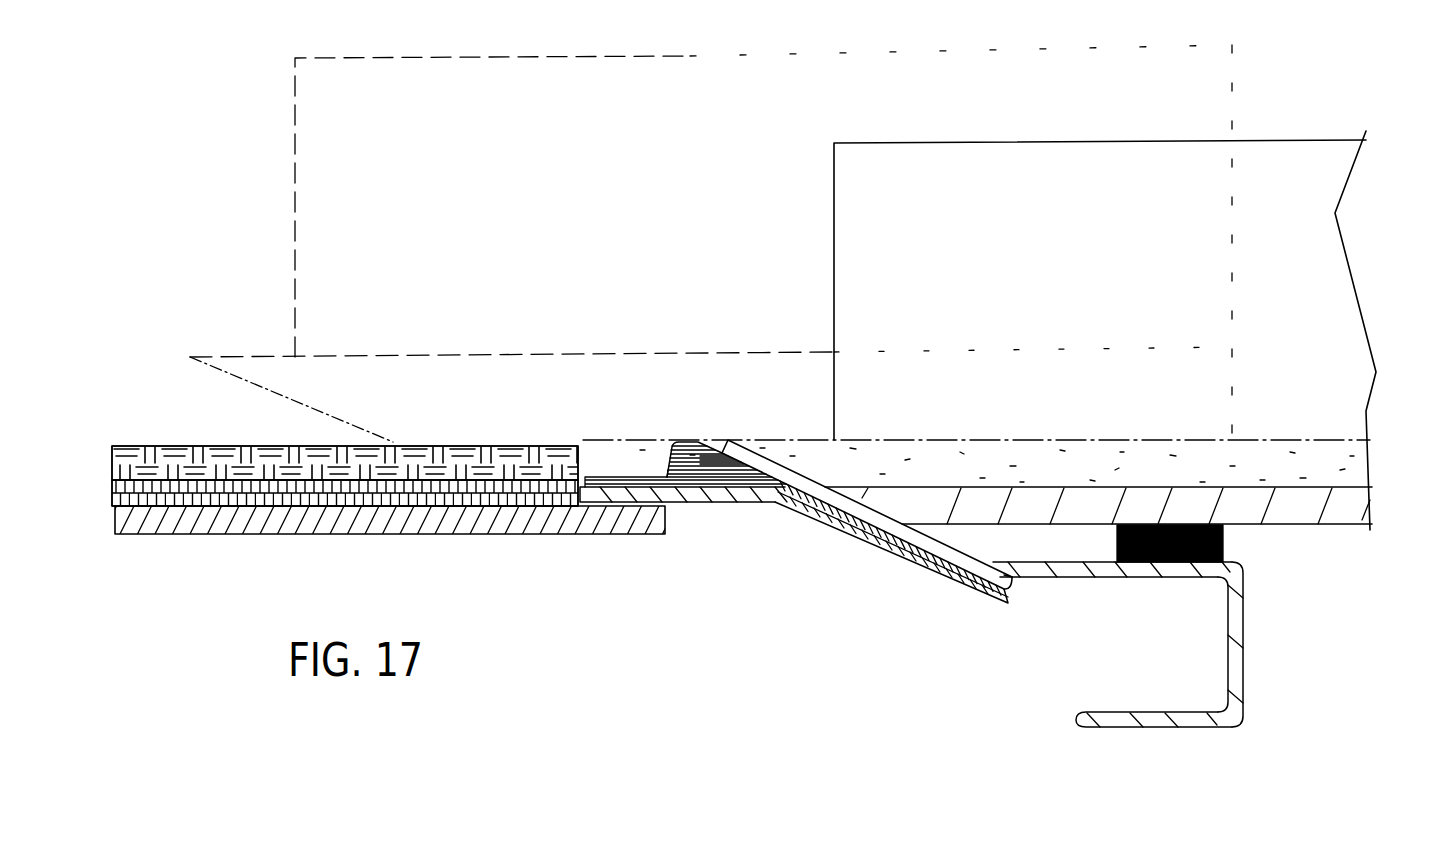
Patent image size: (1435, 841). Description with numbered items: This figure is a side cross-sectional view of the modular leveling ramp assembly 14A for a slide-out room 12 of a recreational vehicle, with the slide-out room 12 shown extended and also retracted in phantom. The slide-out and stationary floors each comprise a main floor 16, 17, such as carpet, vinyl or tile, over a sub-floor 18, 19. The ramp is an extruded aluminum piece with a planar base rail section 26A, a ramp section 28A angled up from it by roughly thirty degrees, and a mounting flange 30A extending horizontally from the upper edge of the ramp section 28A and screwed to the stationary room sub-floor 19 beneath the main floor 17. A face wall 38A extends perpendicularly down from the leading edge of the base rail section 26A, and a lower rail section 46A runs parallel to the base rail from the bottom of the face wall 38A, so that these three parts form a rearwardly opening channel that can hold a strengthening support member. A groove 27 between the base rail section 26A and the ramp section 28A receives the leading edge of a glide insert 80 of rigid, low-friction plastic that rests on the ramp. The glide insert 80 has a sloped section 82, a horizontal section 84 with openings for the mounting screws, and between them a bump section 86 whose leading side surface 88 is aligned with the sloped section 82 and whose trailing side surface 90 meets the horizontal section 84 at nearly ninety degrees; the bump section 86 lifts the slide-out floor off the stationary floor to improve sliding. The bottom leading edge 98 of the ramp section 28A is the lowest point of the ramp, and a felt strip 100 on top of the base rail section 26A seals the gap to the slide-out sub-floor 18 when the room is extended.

The slide-out room 12 is at (701, 44).
The main floor 16 is at (1288, 441).
The main floor 17 is at (138, 455).
The sub-floor 18 is at (1305, 516).
The sub-floor 19 is at (236, 527).
The horizontal section 84 is at (610, 480).
The bump section 86 is at (687, 450).
The leading side surface 88 is at (713, 457).
The trailing side surface 90 is at (670, 462).
The mounting flange 30A is at (695, 506).
The ramp assembly 14A is at (849, 561).
The sloped section 82 is at (808, 508).
The glide insert 80 is at (940, 561).
The ramp section 28A is at (967, 573).
The bottom leading edge 98 is at (1017, 597).
The groove 27 is at (1007, 580).
The base rail section 26A is at (1090, 568).
The face wall 38A is at (1245, 632).
The lower rail section 46A is at (1137, 722).
The felt strip 100 is at (1225, 546).